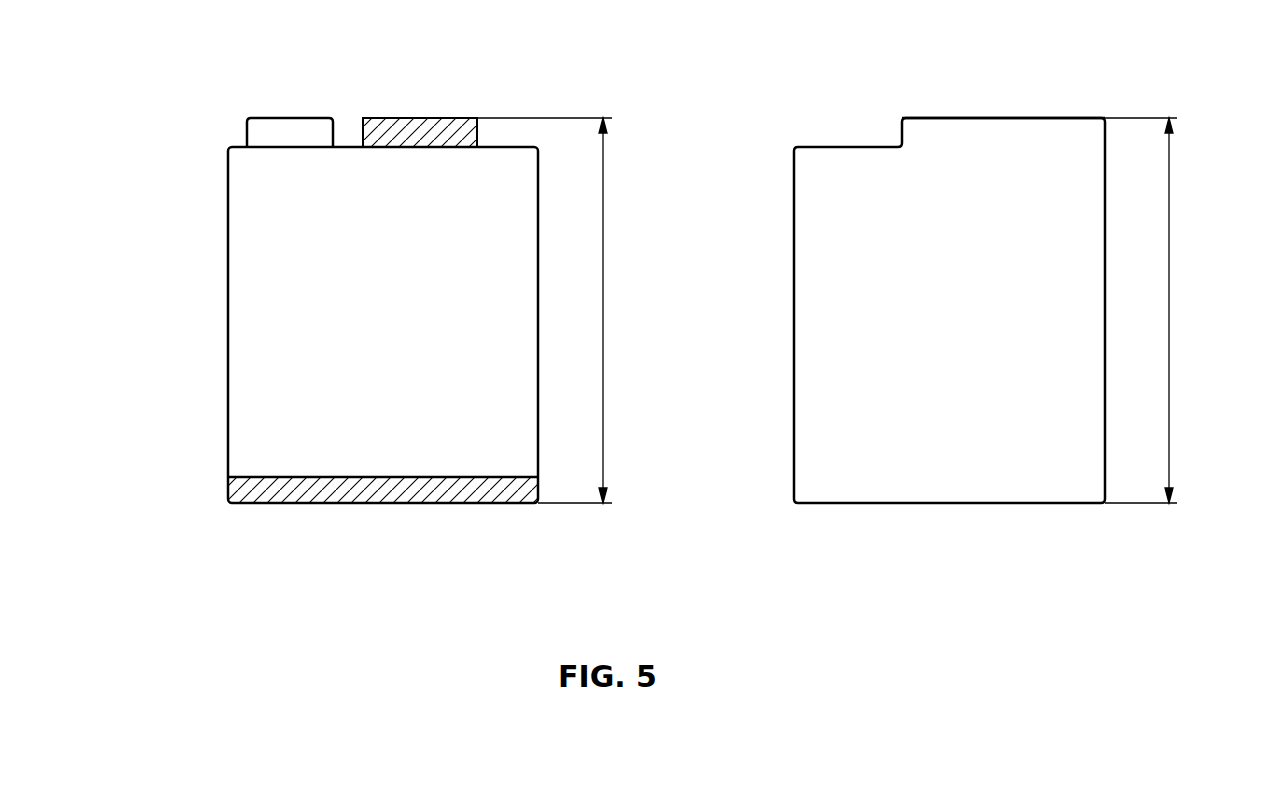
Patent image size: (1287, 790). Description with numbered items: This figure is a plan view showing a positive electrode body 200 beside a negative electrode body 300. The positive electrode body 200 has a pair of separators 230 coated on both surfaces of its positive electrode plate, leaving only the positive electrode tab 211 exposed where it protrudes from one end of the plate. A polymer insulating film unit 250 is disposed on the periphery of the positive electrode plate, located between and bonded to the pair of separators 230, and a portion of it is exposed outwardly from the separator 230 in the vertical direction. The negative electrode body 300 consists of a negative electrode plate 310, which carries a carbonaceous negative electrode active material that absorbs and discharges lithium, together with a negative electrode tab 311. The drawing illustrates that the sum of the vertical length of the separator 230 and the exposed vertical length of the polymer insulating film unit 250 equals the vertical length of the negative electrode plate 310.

The positive electrode body 200 is at (387, 329).
The positive electrode tab 211 is at (288, 125).
The separator 230 is at (262, 276).
The polymer insulating film unit 250 is at (424, 125).
The negative electrode body 300 is at (957, 329).
The negative electrode plate 310 is at (825, 383).
The negative electrode tab 311 is at (1000, 128).